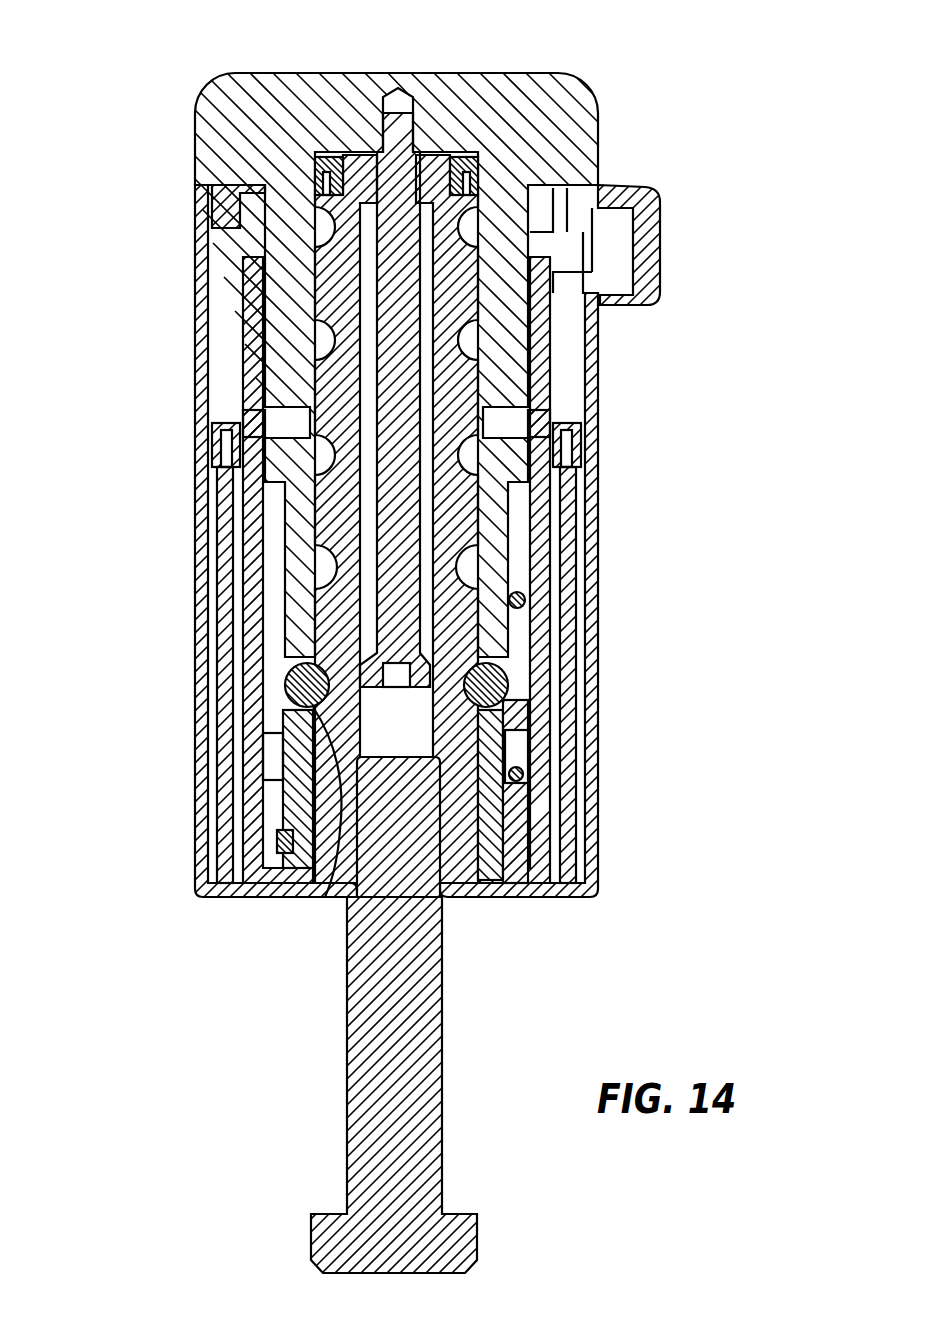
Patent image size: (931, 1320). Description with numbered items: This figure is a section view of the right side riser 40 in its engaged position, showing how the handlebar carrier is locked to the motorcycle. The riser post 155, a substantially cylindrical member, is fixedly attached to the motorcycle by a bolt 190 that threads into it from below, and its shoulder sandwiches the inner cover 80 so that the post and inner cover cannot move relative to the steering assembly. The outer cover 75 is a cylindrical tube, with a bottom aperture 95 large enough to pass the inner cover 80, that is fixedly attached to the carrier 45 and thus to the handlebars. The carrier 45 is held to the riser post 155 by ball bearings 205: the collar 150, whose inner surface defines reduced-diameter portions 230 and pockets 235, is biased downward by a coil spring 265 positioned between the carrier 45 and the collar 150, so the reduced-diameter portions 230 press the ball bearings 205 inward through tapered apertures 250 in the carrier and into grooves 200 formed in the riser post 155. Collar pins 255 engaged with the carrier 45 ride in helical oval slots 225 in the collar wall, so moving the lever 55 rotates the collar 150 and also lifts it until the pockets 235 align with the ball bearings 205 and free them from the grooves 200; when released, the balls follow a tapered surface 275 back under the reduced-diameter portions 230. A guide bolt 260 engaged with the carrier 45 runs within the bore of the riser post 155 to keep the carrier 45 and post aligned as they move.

The riser 40 is at (421, 636).
The carrier 45 is at (572, 104).
The lever 55 is at (661, 258).
The outer cover 75 is at (597, 647).
The inner cover 80 is at (570, 812).
The bottom aperture 95 is at (580, 900).
The collar 150 is at (277, 713).
The riser post 155 is at (250, 775).
The bolt 190 is at (437, 1048).
The grooves 200 is at (227, 837).
The ball bearings 205 is at (287, 687).
The oval slots 225 is at (238, 460).
The reduced-diameter portions 230 is at (307, 663).
The pockets 235 is at (503, 730).
The tapered apertures 250 is at (335, 883).
The collar pins 255 is at (290, 410).
The guide bolt 260 is at (405, 378).
The coil spring 265 is at (518, 593).
The tapered surface 275 is at (253, 755).